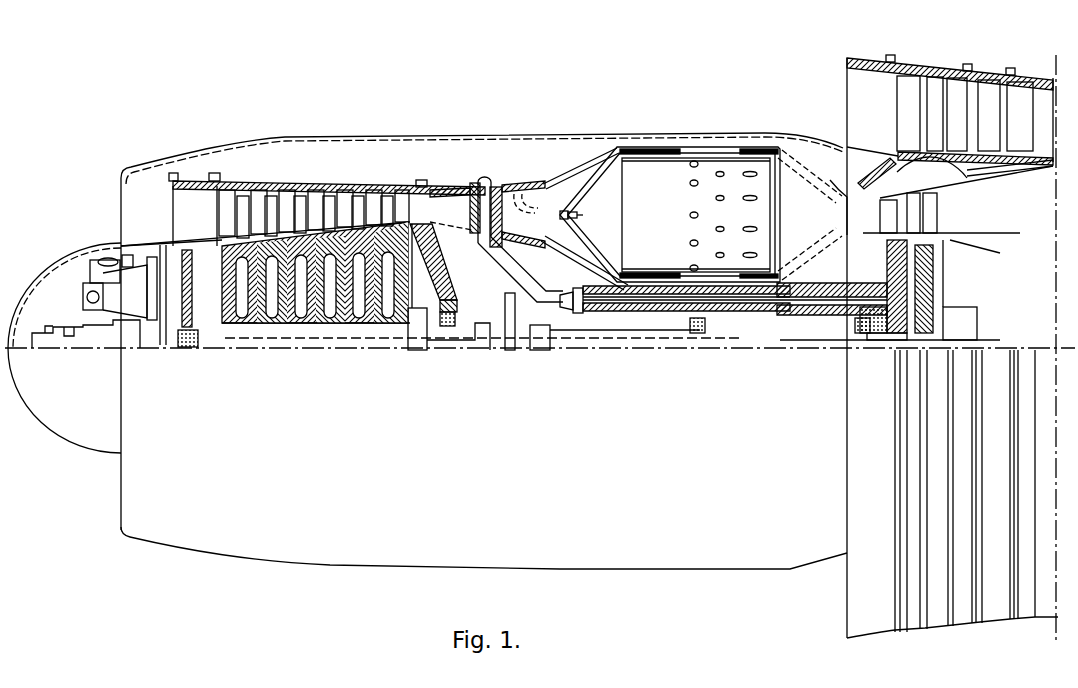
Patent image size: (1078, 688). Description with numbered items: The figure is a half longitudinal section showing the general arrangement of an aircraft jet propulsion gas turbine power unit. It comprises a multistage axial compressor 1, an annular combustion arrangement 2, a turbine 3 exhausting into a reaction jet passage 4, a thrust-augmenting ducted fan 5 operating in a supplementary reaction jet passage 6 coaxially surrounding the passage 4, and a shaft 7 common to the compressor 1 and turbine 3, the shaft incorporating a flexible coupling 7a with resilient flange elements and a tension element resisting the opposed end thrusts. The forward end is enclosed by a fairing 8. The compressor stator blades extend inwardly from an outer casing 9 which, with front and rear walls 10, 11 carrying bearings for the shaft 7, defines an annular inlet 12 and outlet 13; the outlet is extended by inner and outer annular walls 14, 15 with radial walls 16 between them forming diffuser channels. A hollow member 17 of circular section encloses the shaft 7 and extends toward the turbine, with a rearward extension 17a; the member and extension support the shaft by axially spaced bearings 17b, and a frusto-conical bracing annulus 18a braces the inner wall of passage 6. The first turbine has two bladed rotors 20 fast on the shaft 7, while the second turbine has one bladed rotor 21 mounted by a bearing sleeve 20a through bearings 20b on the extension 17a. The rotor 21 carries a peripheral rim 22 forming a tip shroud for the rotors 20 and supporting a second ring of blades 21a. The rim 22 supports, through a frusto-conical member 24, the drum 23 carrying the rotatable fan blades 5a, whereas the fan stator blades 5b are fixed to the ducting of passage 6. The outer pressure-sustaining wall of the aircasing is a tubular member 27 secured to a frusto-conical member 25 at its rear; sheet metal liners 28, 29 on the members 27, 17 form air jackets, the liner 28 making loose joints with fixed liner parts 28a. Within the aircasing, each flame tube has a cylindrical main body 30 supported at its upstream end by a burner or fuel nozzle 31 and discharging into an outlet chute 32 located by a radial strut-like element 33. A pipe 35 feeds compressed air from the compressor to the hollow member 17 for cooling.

The multistage axial compressor 1 is at (265, 173).
The annular combustion arrangement 2 is at (691, 121).
The turbine 3 is at (915, 276).
The reaction jet passage 4 is at (1052, 226).
The thrust-augmenting ducted fan 5 is at (921, 56).
The rotatable fan blades 5a is at (962, 90).
The fan stator blades 5b is at (937, 120).
The supplementary reaction jet passage 6 is at (1029, 136).
The shaft 7 is at (573, 346).
The flexible coupling 7a is at (514, 341).
The fairing 8 is at (371, 131).
The outer casing 9 is at (284, 184).
The front wall 10 is at (187, 318).
The rear wall 11 is at (443, 240).
The annular inlet 12 is at (212, 223).
The annular outlet 13 is at (454, 212).
The inner annular wall 14 is at (523, 231).
The outer annular wall 15 is at (511, 185).
The radial walls 16 is at (572, 210).
The hollow structure or member 17 is at (571, 273).
The rearward extension 17a is at (800, 318).
The bearings 17b is at (692, 327).
The frusto-conical bracing annulus 18a is at (850, 147).
The bladed rotors 20 is at (907, 283).
The bearing sleeve 20a is at (815, 294).
The bearings 20b is at (788, 306).
The bladed rotor 21 is at (847, 318).
The second ring of blades 21a is at (913, 221).
The peripheral rim 22 is at (936, 185).
The drum 23 is at (964, 171).
The frusto-conical member 24 is at (887, 170).
The frusto-conical member 25 is at (842, 193).
The tubular member 27 is at (656, 143).
The sheet metal liner 28 is at (712, 146).
The liner parts 28a is at (560, 184).
The sheet metal liner 29 is at (598, 273).
The flame tube main body 30 is at (632, 170).
The burner or fuel nozzle 31 is at (573, 221).
The outlet chute 32 is at (824, 213).
The strut-like element 33 is at (815, 213).
The pipe 35 is at (494, 262).